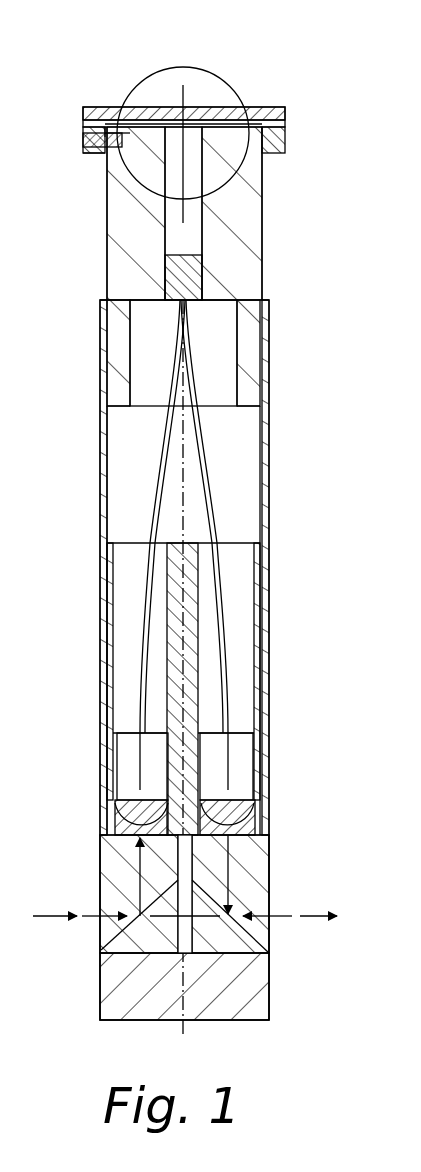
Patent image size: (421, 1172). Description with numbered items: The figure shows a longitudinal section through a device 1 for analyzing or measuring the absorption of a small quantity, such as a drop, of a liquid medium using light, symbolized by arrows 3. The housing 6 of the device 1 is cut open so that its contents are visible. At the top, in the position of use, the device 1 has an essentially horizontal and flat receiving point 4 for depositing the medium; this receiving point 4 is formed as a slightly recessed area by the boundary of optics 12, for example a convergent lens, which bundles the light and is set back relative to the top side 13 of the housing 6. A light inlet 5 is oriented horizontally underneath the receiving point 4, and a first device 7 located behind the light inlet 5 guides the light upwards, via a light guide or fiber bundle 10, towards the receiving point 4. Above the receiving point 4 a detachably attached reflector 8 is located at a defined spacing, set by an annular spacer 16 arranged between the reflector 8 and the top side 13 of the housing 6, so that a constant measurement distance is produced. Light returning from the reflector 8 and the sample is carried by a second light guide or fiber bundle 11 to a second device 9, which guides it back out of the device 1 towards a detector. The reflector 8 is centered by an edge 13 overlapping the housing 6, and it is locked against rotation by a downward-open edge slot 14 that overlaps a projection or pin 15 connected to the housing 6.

The device 1 is at (297, 285).
The arrows 3 is at (73, 918).
The receiving point 4 is at (174, 128).
The light inlet 5 is at (100, 913).
The housing 6 is at (115, 343).
The first device 7 is at (128, 922).
The reflector 8 is at (212, 110).
The second device 9 is at (247, 923).
The light guide 10 is at (160, 488).
The light guide 11 is at (220, 487).
The optics 12 is at (150, 196).
The edge 13 is at (148, 130).
The edge slot 14 is at (95, 152).
The pin 15 is at (140, 138).
The annular spacer 16 is at (114, 122).